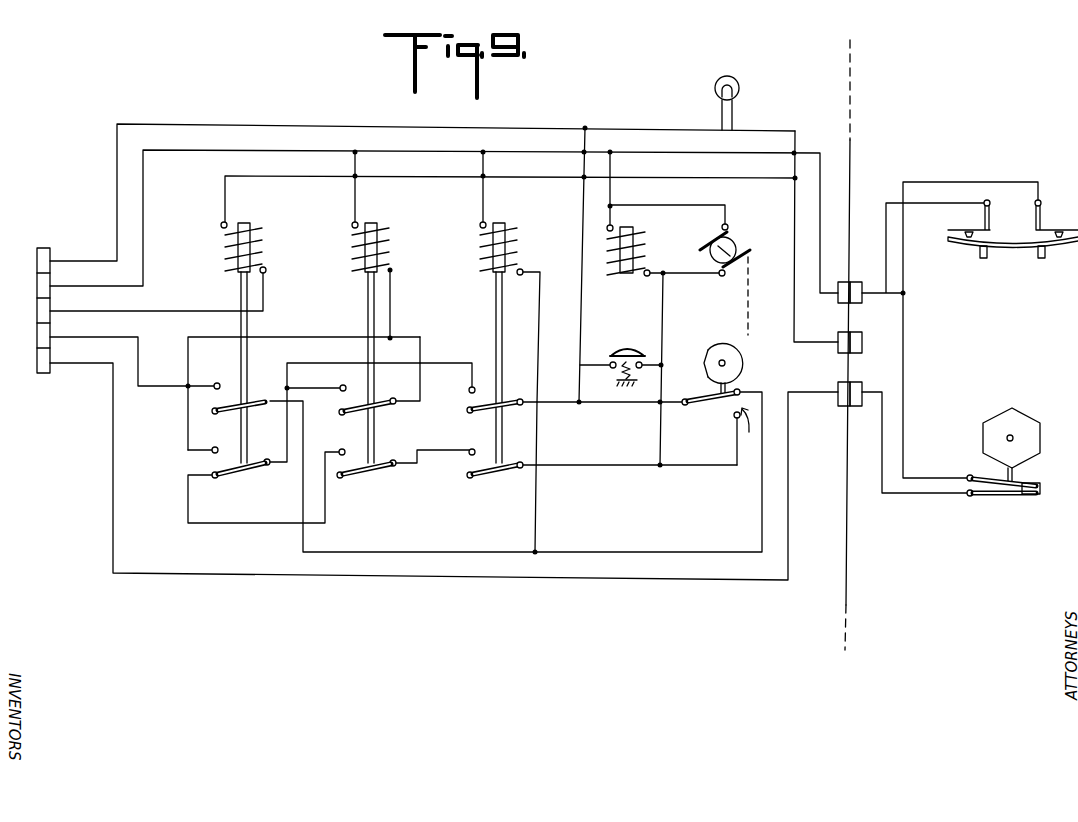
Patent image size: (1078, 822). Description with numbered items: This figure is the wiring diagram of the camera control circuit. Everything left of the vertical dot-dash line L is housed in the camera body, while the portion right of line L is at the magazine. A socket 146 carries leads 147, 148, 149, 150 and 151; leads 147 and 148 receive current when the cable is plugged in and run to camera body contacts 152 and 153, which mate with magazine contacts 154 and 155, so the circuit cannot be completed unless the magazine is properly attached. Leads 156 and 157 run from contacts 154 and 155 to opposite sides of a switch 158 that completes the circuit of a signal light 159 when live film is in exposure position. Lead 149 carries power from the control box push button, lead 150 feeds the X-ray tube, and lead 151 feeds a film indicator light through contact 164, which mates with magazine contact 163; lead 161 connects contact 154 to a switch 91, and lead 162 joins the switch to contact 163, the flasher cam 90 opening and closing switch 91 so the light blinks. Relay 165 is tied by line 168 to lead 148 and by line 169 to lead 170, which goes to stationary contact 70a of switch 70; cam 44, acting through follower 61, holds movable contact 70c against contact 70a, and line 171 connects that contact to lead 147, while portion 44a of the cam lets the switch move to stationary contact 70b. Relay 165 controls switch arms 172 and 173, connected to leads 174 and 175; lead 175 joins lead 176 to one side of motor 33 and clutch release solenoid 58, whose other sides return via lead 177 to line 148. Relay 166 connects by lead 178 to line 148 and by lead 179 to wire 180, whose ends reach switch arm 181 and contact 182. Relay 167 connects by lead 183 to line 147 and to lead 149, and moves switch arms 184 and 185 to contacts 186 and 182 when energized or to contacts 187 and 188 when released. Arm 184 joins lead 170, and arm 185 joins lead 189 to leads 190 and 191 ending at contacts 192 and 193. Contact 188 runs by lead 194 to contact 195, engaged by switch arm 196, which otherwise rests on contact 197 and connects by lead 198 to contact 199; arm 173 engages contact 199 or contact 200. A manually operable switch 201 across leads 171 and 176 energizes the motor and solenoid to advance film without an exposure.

The socket 146 is at (40, 248).
The lead 147 is at (62, 263).
The lead 148 is at (67, 288).
The lead 149 is at (68, 313).
The lead 150 is at (67, 338).
The lead 151 is at (67, 363).
The lead 183 is at (272, 176).
The lead 178 is at (358, 200).
The line 168 is at (486, 200).
The lead 177 is at (614, 200).
The relay 167 is at (262, 242).
The relay 166 is at (389, 245).
The relay 165 is at (519, 236).
The clutch release solenoid 58 is at (646, 248).
The lead 179 is at (394, 296).
The line 169 is at (540, 318).
The lead 174 is at (540, 410).
The motor 33 is at (737, 240).
The signal light 159 is at (739, 82).
The wire 180 is at (320, 338).
The contact 186 is at (217, 382).
The contact 182 is at (211, 452).
The contact 187 is at (220, 415).
The switch arm 184 is at (254, 400).
The switch arm 185 is at (266, 458).
The contact 188 is at (217, 479).
The lead 189 is at (287, 458).
The lead 194 is at (228, 525).
The lead 170 is at (447, 552).
The lead 190 is at (303, 362).
The contact 192 is at (470, 380).
The contact 193 is at (341, 385).
The lead 191 is at (317, 386).
The switch arm 181 is at (372, 400).
The contact 195 is at (342, 448).
The switch arm 196 is at (390, 459).
The contact 197 is at (343, 478).
The lead 198 is at (430, 448).
The contact 199 is at (473, 449).
The switch arm 172 is at (516, 400).
The contact 200 is at (468, 478).
The switch arm 173 is at (516, 462).
The line 171 is at (615, 405).
The lead 175 is at (574, 467).
The lead 176 is at (659, 450).
The manually operable switch 201 is at (626, 348).
The cam 44 is at (736, 344).
The portion of the cam 44a is at (706, 356).
The follower 61 is at (700, 390).
The movable contact 70c is at (711, 398).
The stationary contact 70a is at (740, 390).
The stationary contact 70b is at (733, 418).
The switch 70 is at (749, 429).
The vertical dot-dash line L is at (856, 103).
The contact 152 is at (842, 280).
The contact 154 is at (858, 280).
The contact 153 is at (838, 334).
The contact 155 is at (860, 336).
The contact 164 is at (840, 381).
The magazine contact 163 is at (860, 381).
The lead 156 is at (886, 214).
The lead 157 is at (904, 248).
The switch 158 is at (1020, 250).
The lead 161 is at (905, 396).
The lead 162 is at (882, 460).
The flasher cam 90 is at (1015, 418).
The switch 91 is at (1033, 480).